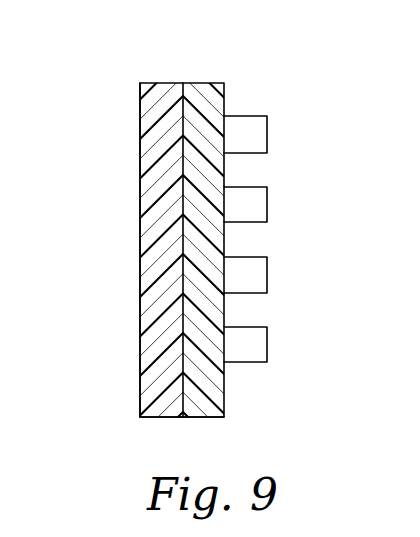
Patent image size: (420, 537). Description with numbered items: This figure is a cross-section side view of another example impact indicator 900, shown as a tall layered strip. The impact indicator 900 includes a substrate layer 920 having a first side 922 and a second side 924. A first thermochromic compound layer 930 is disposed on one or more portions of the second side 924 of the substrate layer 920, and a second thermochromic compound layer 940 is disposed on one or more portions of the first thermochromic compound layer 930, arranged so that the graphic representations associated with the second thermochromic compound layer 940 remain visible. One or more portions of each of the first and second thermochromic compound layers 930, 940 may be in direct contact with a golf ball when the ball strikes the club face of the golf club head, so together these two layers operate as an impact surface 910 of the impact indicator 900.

The impact indicator 900 is at (124, 59).
The impact surface 910 is at (283, 241).
The substrate layer 920 is at (160, 116).
The first side 922 is at (140, 163).
The second side 924 is at (185, 98).
The first thermochromic compound layer 930 is at (208, 417).
The second thermochromic compound layer 940 is at (267, 130).